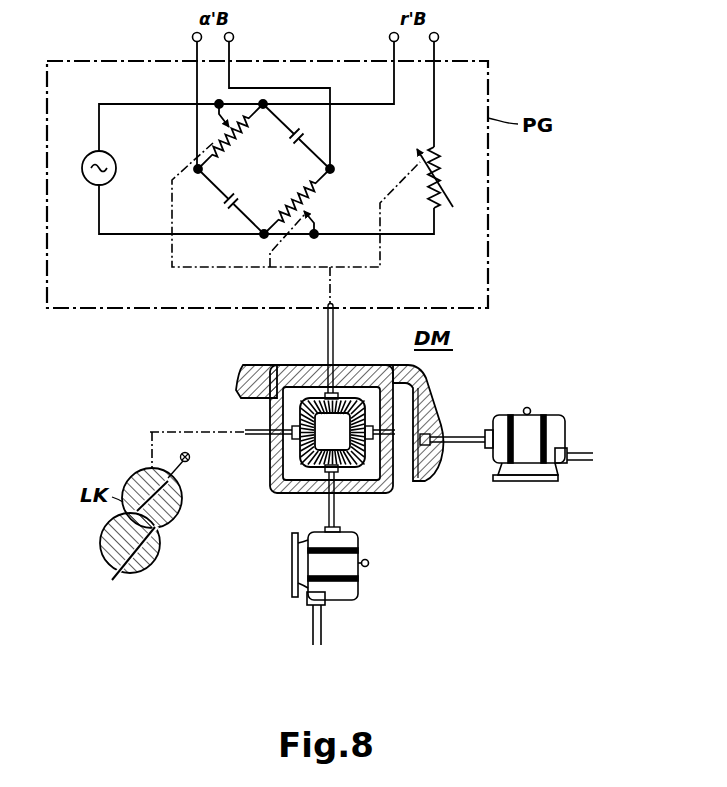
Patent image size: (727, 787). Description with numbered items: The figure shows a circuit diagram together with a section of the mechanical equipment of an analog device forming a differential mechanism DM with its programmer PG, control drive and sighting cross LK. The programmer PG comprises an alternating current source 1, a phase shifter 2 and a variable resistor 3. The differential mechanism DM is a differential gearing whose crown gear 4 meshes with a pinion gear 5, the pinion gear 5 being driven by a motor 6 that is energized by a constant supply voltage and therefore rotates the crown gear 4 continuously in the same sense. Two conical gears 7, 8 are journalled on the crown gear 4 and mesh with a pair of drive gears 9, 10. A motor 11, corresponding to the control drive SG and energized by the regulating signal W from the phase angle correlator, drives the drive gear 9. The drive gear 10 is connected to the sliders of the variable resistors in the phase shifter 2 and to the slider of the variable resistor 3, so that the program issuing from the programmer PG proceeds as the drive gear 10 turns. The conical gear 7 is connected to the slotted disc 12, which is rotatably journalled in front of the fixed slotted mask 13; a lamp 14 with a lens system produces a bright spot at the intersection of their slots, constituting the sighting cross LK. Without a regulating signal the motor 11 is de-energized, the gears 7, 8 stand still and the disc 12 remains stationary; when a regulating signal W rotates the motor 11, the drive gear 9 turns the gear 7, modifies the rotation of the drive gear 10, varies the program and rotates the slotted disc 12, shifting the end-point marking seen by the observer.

The alternating current source 1 is at (116, 169).
The phase shifter 2 is at (264, 169).
The variable resistor 3 is at (441, 168).
The crown gear 4 is at (366, 371).
The pinion gear 5 is at (433, 423).
The motor 6 is at (553, 432).
The conical gear 7 is at (312, 411).
The conical gear 8 is at (369, 438).
The drive gear 9 is at (320, 463).
The drive gear 10 is at (340, 395).
The motor 11 is at (352, 588).
The slotted disc 12 is at (180, 502).
The slotted mask 13 is at (152, 555).
The lamp 14 is at (190, 457).